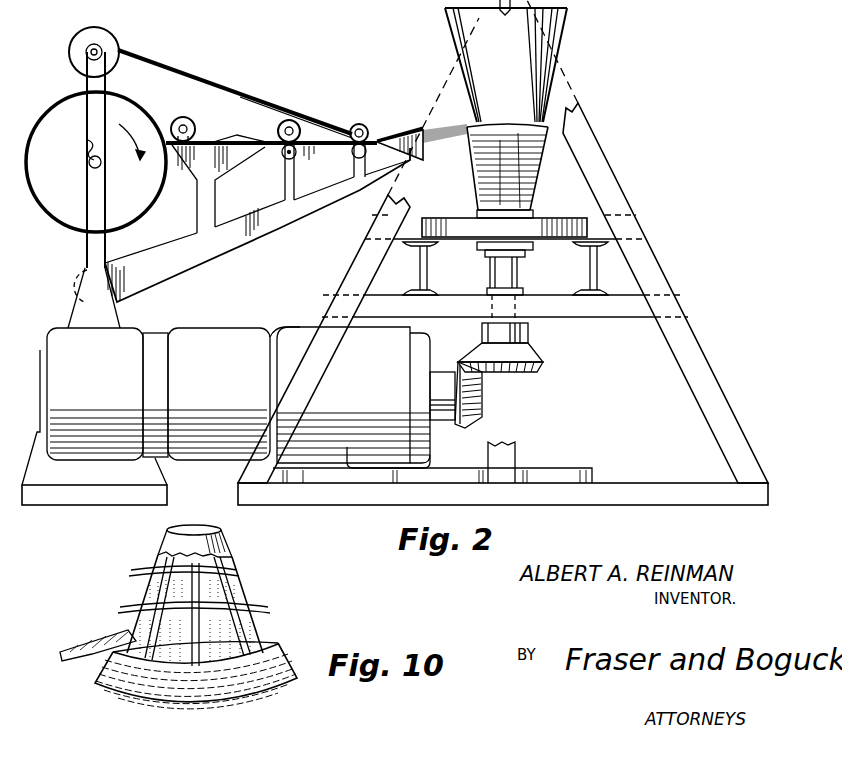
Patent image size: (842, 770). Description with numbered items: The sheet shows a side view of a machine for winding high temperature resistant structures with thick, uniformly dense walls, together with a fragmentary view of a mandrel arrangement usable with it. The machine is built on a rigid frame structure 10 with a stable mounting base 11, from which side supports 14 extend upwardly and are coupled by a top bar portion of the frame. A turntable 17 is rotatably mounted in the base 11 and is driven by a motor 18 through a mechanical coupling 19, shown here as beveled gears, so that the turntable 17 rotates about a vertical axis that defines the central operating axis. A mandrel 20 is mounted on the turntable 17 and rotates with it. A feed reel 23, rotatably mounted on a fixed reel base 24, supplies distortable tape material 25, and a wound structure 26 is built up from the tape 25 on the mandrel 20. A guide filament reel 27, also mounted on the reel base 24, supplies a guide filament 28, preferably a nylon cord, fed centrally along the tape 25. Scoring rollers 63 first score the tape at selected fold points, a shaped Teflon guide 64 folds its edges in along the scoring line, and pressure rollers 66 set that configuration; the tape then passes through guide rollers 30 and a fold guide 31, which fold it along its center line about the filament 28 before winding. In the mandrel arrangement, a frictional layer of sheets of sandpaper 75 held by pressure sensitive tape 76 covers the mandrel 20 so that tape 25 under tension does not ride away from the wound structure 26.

In FIG. 2, the frame structure 10 is at (688, 243).
In FIG. 2, the mounting base 11 is at (638, 322).
In FIG. 2, the side supports 14 is at (356, 262).
In FIG. 2, the turntable 17 is at (588, 218).
In FIG. 2, the motor 18 is at (292, 328).
In FIG. 2, the mechanical coupling 19 is at (536, 374).
In FIG. 10, the mandrel 20 is at (162, 540).
In FIG. 2, the feed reel 23 is at (62, 102).
In FIG. 2, the reel base 24 is at (115, 482).
In FIG. 2, the tape material 25 is at (271, 156).
In FIG. 10, the tape material 25 is at (80, 650).
In FIG. 2, the wound structure 26 is at (476, 192).
In FIG. 10, the wound structure 26 is at (282, 644).
In FIG. 2, the guide filament reel 27 is at (88, 37).
In FIG. 2, the guide filament 28 is at (224, 74).
In FIG. 2, the guide rollers 30 is at (357, 126).
In FIG. 2, the fold guide 31 is at (411, 133).
In FIG. 2, the scoring rollers 63 is at (188, 119).
In FIG. 2, the shaped Teflon guide 64 is at (222, 140).
In FIG. 2, the pressure rollers 66 is at (273, 165).
In FIG. 10, the sheets of sandpaper 75 is at (148, 580).
In FIG. 10, the pressure sensitive tape 76 is at (242, 600).